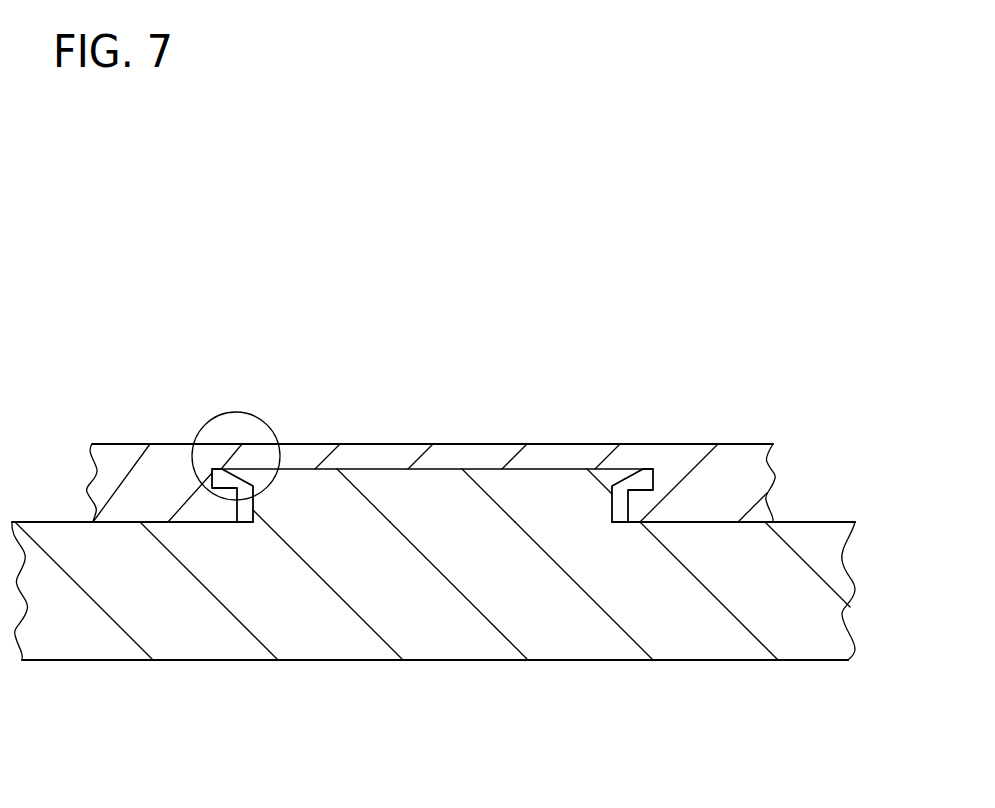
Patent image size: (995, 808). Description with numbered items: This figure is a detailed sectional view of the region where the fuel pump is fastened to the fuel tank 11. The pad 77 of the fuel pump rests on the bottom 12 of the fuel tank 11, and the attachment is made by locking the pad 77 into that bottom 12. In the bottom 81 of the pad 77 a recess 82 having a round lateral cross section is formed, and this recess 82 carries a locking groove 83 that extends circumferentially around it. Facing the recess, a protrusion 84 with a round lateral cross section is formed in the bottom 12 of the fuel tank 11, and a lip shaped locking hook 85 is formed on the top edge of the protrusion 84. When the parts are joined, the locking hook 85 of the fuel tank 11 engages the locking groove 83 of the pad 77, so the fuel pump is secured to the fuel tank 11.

The fuel tank 11 is at (202, 660).
The bottom of the fuel tank 12 is at (805, 522).
The pad 77 is at (173, 444).
The bottom of the pad 81 is at (668, 444).
The recess 82 is at (277, 444).
The locking groove 83 is at (192, 444).
The protrusion 84 is at (443, 492).
The locking hook 85 is at (626, 469).